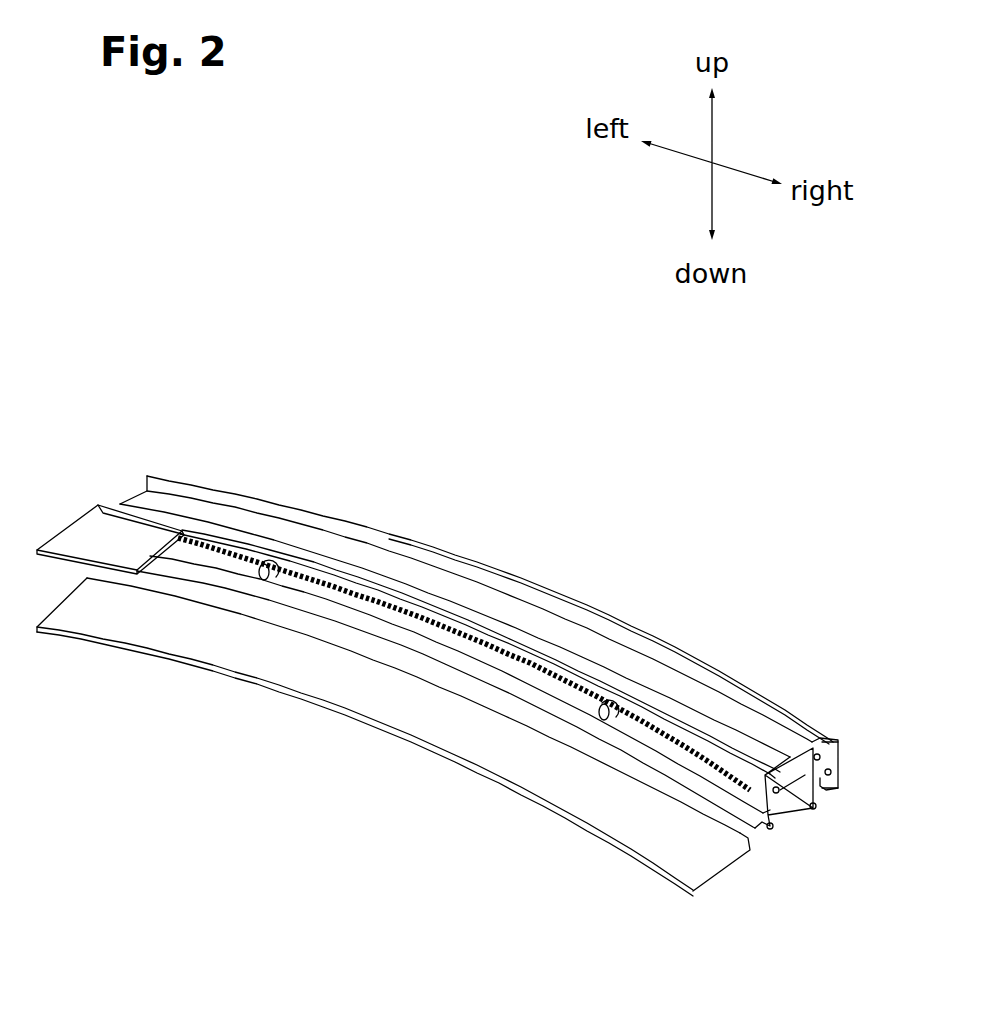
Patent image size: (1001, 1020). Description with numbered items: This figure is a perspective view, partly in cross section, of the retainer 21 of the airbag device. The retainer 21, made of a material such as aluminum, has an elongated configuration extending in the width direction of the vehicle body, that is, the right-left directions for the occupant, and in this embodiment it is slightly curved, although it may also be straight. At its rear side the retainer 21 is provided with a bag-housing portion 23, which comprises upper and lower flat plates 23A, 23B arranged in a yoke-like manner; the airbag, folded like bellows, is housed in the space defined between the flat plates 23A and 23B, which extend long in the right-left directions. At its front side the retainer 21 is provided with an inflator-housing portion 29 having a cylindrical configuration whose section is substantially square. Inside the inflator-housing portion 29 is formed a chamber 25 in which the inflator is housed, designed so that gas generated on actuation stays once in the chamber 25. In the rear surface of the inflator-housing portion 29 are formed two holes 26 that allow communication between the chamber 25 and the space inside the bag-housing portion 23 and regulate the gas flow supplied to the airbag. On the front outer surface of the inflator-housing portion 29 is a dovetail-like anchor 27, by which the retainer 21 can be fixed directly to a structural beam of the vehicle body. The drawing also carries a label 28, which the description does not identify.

The retainer 21 is at (483, 524).
The bag-housing portion 23 is at (385, 700).
The upper flat plate 23A is at (100, 540).
The lower flat plate 23B is at (30, 733).
The chamber 25 is at (803, 812).
The holes 26 is at (292, 565).
The dovetail-like anchor 27 is at (838, 762).
The guide groove with chain 28 is at (698, 722).
The inflator-housing portion 29 is at (760, 735).